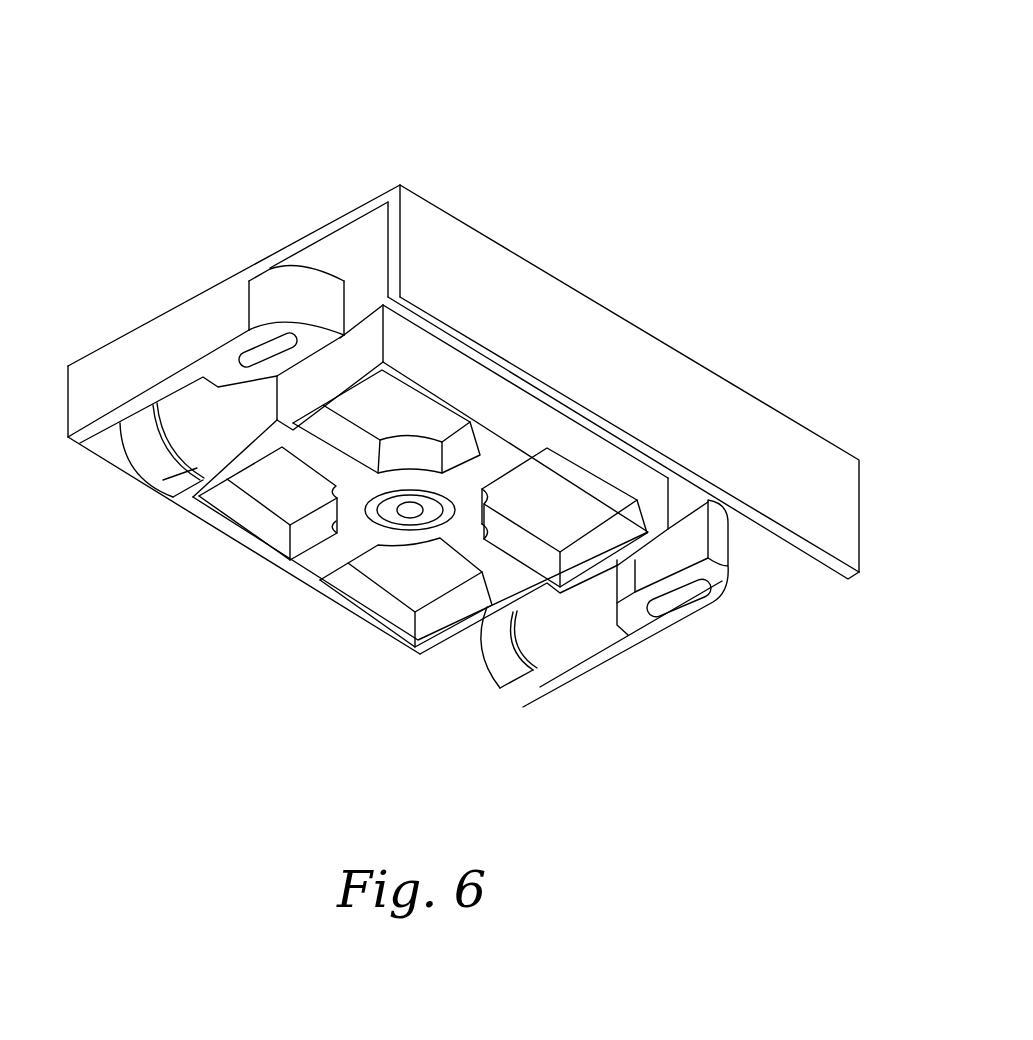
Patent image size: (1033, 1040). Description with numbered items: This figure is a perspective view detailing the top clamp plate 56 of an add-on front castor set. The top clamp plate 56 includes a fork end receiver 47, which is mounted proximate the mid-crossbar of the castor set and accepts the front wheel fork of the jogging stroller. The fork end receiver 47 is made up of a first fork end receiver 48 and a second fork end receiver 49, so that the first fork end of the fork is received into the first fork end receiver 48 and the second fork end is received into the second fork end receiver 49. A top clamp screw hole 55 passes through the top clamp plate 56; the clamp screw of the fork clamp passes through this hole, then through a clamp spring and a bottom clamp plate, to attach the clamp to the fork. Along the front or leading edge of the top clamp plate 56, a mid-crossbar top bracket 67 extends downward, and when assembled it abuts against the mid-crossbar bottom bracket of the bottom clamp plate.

The top clamp plate 56 is at (264, 107).
The mid-crossbar top bracket 67 is at (613, 357).
The first fork end receiver 48 is at (213, 423).
The second fork end receiver 49 is at (572, 627).
The fork end receiver 47 is at (178, 405).
The top clamp screw hole 55 is at (410, 513).